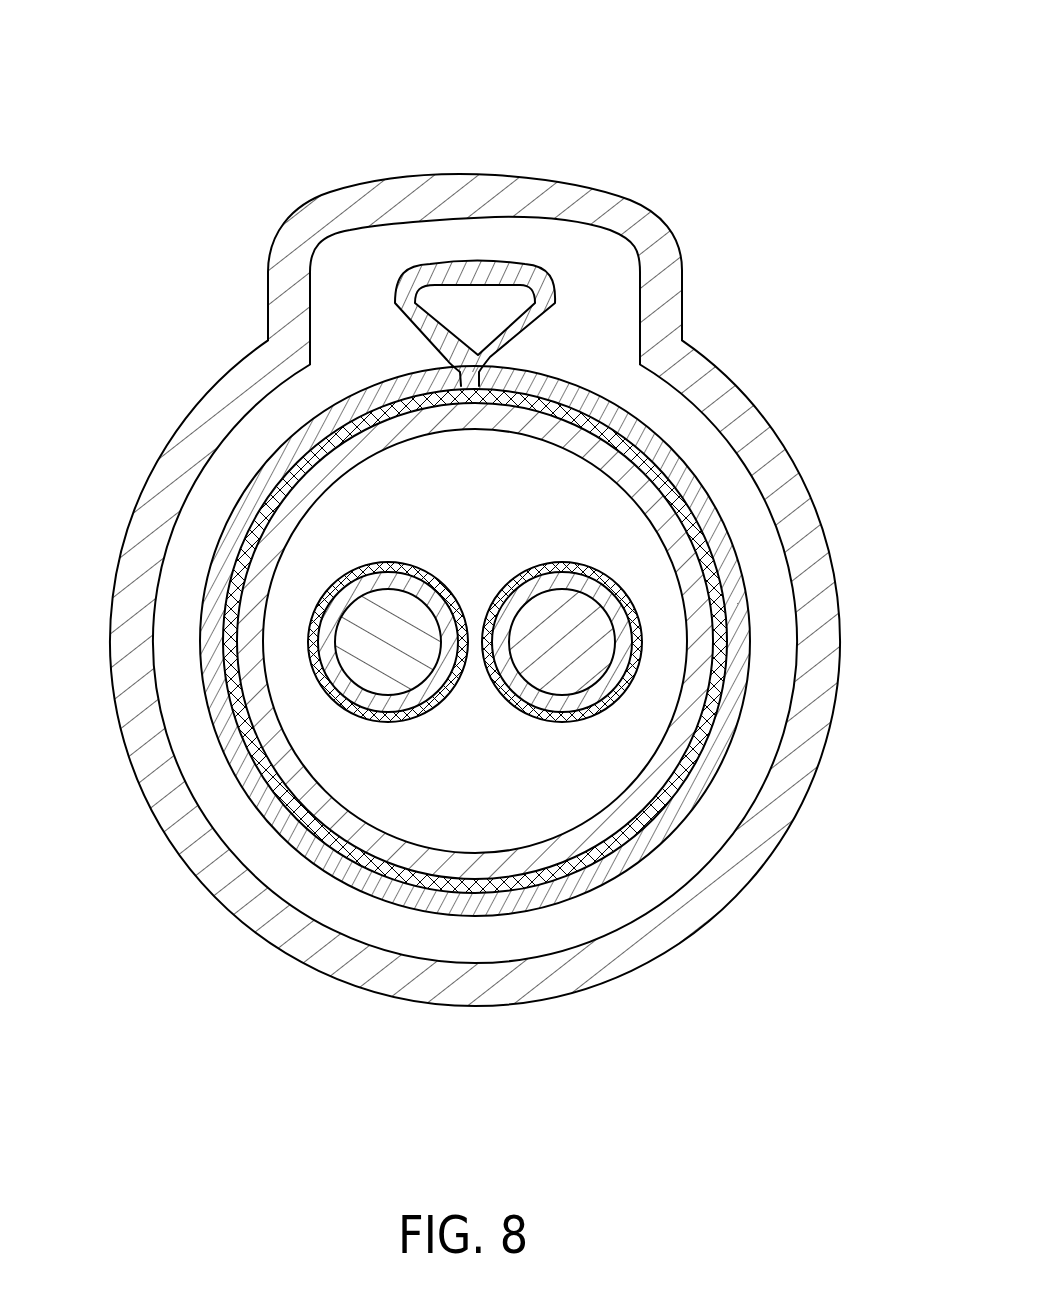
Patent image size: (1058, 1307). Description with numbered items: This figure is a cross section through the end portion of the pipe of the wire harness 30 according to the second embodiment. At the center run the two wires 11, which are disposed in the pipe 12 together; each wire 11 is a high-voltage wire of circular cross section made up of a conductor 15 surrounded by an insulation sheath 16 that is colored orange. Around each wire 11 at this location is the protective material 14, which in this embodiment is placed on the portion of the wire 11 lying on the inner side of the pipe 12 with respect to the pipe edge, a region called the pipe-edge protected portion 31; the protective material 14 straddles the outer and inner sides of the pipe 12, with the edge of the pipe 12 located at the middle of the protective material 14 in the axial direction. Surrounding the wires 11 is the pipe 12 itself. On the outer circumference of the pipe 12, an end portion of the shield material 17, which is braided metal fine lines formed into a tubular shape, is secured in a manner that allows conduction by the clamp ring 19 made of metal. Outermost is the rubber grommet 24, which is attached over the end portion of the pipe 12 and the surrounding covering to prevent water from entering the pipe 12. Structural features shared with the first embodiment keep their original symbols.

The wire harness 30 is at (294, 122).
The pipe-edge protected portion 31 is at (307, 555).
The wire 11 is at (558, 650).
The conductor 15 is at (582, 627).
The insulation sheath 16 is at (622, 652).
The protective material 14 is at (343, 703).
The pipe 12 is at (583, 843).
The shield material 17 is at (340, 848).
The clamp ring 19 is at (305, 437).
The grommet 24 is at (695, 362).